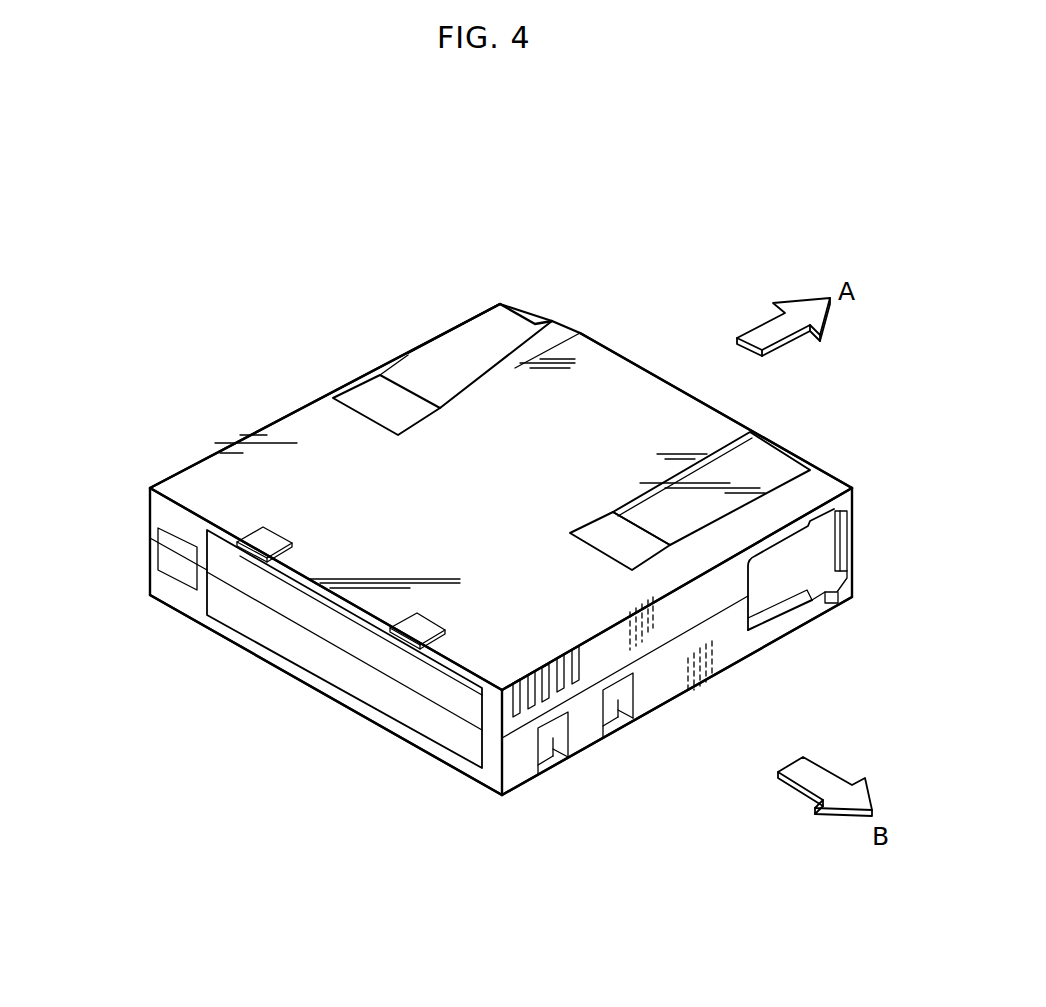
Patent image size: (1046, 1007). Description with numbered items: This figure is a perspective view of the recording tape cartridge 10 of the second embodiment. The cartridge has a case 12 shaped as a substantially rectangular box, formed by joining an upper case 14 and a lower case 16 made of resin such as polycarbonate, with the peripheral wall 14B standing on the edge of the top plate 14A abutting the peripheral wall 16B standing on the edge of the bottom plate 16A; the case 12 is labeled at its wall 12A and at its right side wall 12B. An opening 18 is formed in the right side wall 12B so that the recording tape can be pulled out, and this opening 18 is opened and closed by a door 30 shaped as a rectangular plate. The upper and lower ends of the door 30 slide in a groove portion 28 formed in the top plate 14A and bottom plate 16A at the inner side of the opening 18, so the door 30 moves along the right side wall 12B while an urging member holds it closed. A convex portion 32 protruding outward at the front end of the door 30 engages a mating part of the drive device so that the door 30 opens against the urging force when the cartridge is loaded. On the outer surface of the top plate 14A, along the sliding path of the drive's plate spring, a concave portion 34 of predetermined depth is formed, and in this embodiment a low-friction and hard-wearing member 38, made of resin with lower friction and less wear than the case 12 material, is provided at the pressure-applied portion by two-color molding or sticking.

The recording tape cartridge 10 is at (453, 216).
The case 12 is at (612, 347).
The front wall of case 12A is at (670, 382).
The right side wall 12B is at (703, 625).
The upper case 14 is at (192, 486).
The top plate 14A is at (288, 425).
The peripheral wall 14B is at (156, 512).
The lower case 16 is at (681, 699).
The bottom plate 16A is at (658, 710).
The peripheral wall 16B is at (156, 580).
The opening 18 is at (812, 572).
The groove portion 28 is at (782, 612).
The door 30 is at (838, 583).
The convex portion 32 is at (848, 542).
The concave portion 34 is at (510, 344).
The low-friction and hard-wearing member 38 is at (370, 394).